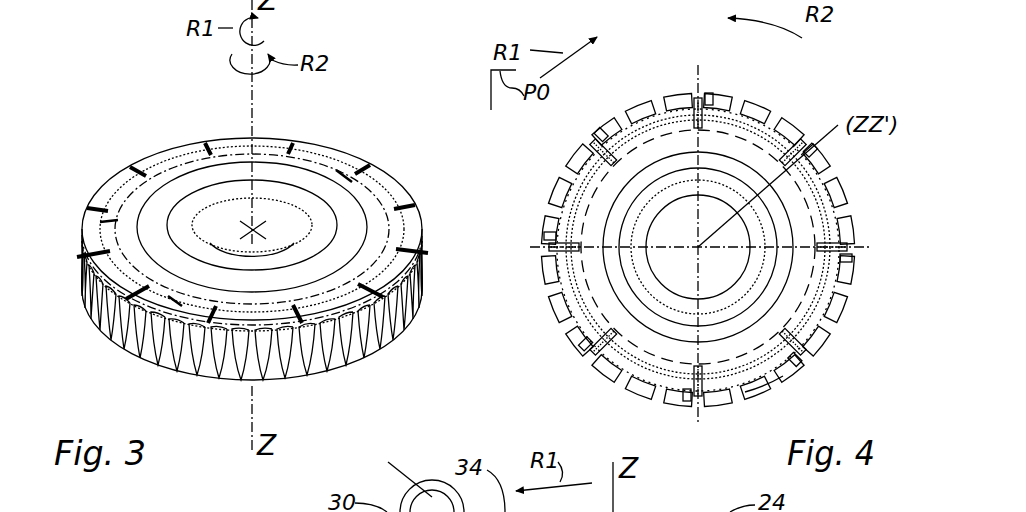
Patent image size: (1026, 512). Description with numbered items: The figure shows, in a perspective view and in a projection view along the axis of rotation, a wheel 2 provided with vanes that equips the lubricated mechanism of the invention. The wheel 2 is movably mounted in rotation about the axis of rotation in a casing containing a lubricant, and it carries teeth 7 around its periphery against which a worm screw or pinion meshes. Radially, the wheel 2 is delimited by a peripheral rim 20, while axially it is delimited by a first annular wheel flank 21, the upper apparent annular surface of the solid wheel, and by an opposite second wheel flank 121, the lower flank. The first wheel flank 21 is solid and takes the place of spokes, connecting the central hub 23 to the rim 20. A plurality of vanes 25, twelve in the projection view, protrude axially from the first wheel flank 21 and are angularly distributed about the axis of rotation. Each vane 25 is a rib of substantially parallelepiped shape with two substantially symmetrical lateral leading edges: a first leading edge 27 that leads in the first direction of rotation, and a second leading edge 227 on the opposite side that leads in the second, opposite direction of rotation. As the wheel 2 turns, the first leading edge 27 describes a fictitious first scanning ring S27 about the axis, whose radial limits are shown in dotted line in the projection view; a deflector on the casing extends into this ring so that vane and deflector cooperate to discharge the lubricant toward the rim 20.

In FIG. 3, the wheel 2 is at (237, 247).
In FIG. 4, the wheel 2 is at (704, 231).
In FIG. 3, the teeth 7 is at (112, 338).
In FIG. 4, the teeth 7 is at (637, 103).
In FIG. 3, the peripheral rim 20 is at (80, 276).
In FIG. 4, the peripheral rim 20 is at (862, 229).
In FIG. 3, the first annular wheel flank 21 is at (183, 166).
In FIG. 4, the first annular wheel flank 21 is at (824, 222).
In FIG. 3, the hub 23 is at (303, 193).
In FIG. 4, the hub 23 is at (765, 222).
In FIG. 3, the vane 25 is at (214, 143).
In FIG. 4, the vane 25 is at (697, 103).
In FIG. 3, the first leading edge 27 is at (222, 147).
In FIG. 4, the first leading edge 27 is at (748, 116).
In FIG. 3, the second wheel flank 121 is at (336, 382).
In FIG. 3, the second leading edge 227 is at (96, 229).
In FIG. 4, the second leading edge 227 is at (720, 107).
In FIG. 4, the first scanning ring S27 is at (765, 380).